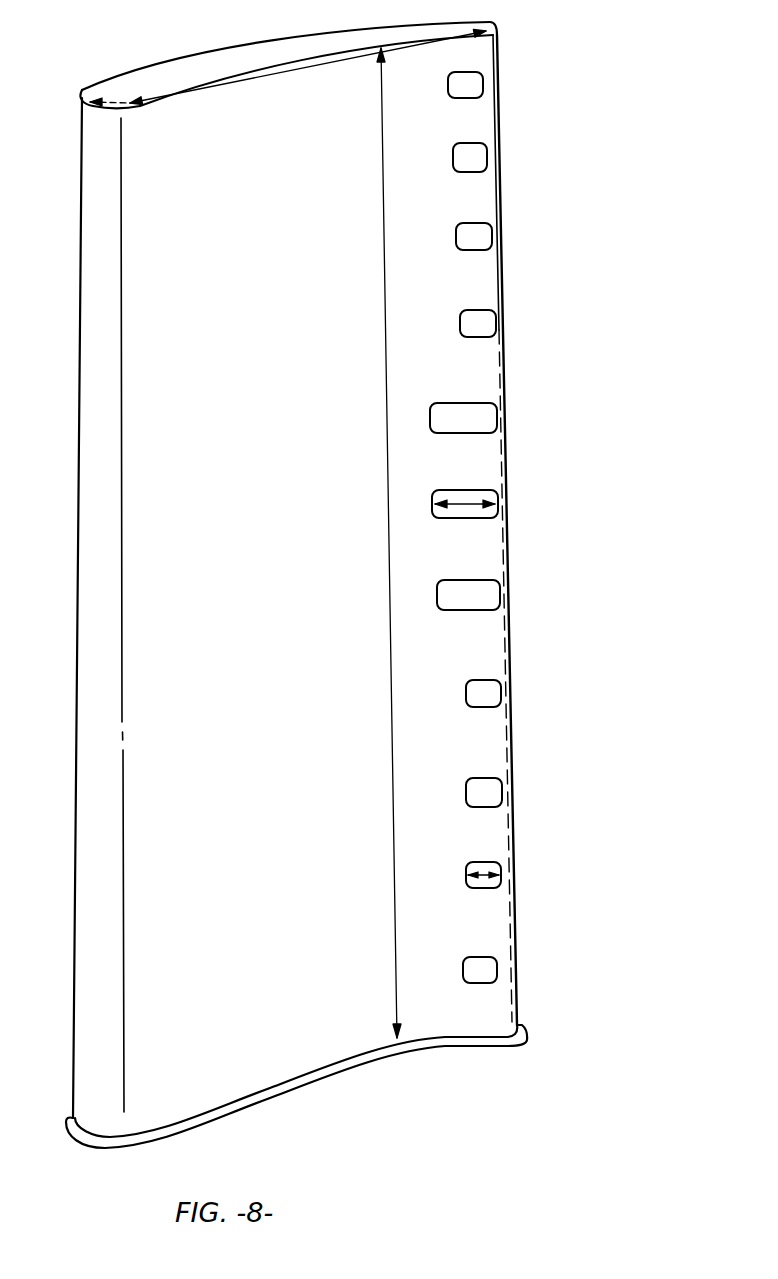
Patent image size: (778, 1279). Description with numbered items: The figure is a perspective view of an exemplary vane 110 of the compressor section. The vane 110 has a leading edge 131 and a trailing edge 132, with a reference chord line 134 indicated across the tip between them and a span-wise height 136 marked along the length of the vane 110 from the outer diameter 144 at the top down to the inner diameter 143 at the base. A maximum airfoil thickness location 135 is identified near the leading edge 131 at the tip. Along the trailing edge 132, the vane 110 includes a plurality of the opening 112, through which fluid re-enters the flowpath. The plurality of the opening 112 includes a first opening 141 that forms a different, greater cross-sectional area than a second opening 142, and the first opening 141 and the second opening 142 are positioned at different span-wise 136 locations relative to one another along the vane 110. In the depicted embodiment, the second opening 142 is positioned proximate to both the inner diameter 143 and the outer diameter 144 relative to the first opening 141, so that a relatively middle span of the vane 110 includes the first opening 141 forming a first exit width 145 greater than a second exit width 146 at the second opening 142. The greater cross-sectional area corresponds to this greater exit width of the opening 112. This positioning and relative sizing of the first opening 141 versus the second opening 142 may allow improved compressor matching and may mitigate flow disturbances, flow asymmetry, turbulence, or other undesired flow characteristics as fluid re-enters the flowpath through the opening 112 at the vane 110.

The vane 110 is at (592, 148).
The opening 112 is at (478, 310).
The leading edge 131 is at (78, 550).
The trailing edge 132 is at (498, 127).
The reference chord line 134 is at (343, 60).
The maximum airfoil thickness location 135 is at (112, 80).
The span-wise height 136 is at (383, 462).
The first opening 141 is at (475, 490).
The second opening 142 is at (470, 70).
The inner diameter 143 is at (307, 1072).
The outer diameter 144 is at (267, 47).
The first exit width 145 is at (470, 508).
The second exit width 146 is at (483, 870).